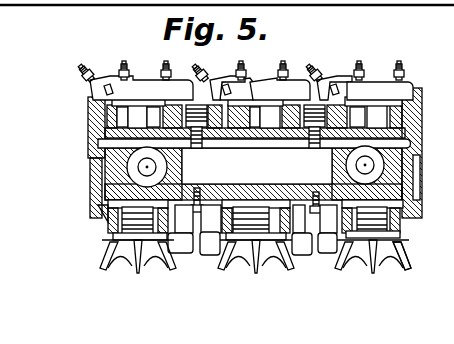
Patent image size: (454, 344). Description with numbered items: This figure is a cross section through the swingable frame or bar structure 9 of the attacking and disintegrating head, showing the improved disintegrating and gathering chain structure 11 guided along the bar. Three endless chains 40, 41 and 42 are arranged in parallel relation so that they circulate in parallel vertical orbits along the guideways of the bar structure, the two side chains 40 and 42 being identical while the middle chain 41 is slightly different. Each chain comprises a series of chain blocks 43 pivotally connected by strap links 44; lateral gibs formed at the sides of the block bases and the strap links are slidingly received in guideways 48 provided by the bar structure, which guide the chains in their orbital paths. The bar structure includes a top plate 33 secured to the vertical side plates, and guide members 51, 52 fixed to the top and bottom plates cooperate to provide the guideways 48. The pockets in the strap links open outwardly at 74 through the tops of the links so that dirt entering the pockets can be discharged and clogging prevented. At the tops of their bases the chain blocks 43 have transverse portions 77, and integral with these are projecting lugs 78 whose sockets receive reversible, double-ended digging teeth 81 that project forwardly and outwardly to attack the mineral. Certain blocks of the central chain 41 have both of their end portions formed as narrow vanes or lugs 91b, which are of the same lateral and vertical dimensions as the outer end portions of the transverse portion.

The frame or bar structure 9 is at (88, 118).
The disintegrating and gathering chain structure 11 is at (358, 257).
The top plate 33 is at (253, 117).
The endless chain 40 is at (390, 257).
The endless chain 41 is at (274, 257).
The endless chain 42 is at (127, 255).
The chain block 43 is at (122, 227).
The strap link 44 is at (393, 212).
The guideway 48 is at (118, 212).
The guide member 51 is at (176, 116).
The guide member 52 is at (182, 212).
The pocket opening 74 is at (375, 110).
The transverse portion 77 is at (371, 82).
The projecting lug 78 is at (356, 82).
The digging tooth 81 is at (160, 66).
The narrow vane or lug 91b is at (208, 252).